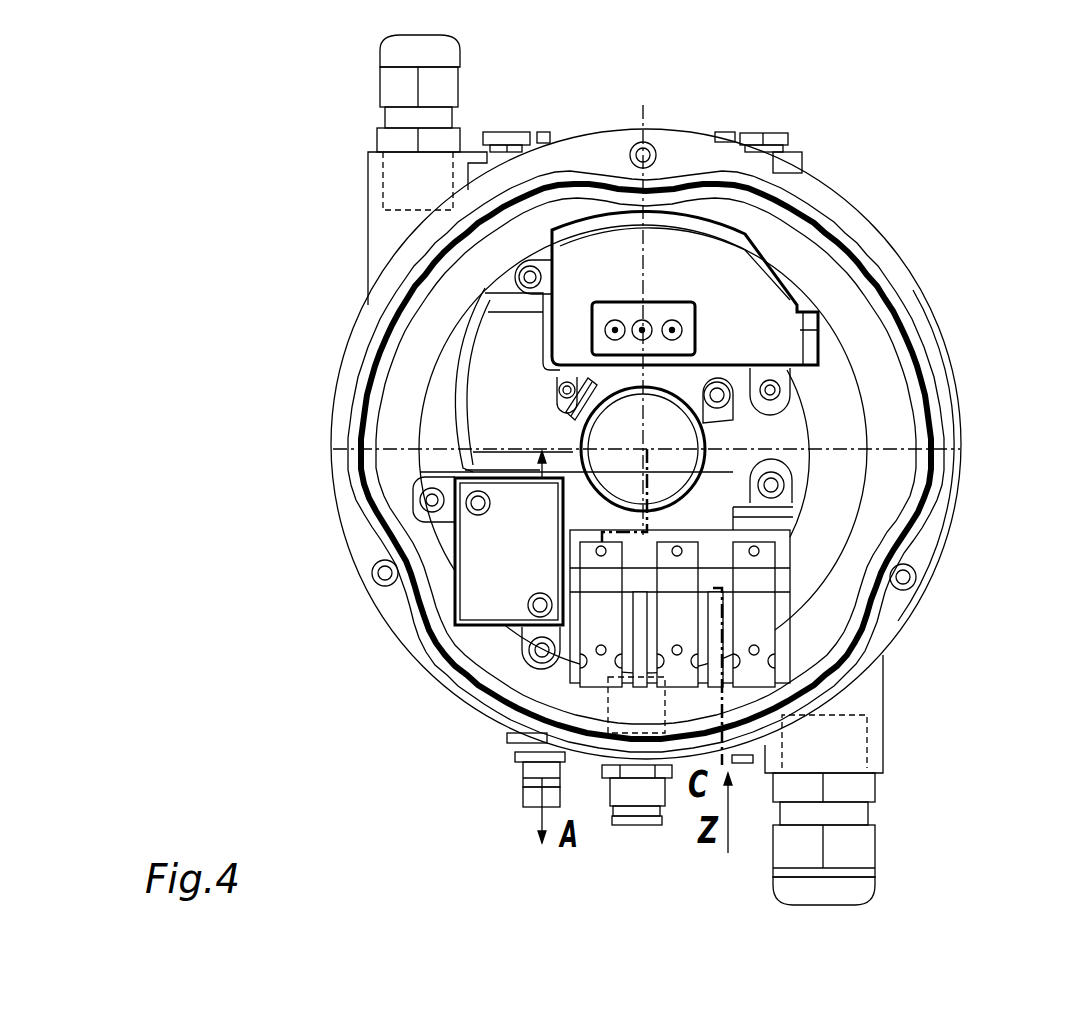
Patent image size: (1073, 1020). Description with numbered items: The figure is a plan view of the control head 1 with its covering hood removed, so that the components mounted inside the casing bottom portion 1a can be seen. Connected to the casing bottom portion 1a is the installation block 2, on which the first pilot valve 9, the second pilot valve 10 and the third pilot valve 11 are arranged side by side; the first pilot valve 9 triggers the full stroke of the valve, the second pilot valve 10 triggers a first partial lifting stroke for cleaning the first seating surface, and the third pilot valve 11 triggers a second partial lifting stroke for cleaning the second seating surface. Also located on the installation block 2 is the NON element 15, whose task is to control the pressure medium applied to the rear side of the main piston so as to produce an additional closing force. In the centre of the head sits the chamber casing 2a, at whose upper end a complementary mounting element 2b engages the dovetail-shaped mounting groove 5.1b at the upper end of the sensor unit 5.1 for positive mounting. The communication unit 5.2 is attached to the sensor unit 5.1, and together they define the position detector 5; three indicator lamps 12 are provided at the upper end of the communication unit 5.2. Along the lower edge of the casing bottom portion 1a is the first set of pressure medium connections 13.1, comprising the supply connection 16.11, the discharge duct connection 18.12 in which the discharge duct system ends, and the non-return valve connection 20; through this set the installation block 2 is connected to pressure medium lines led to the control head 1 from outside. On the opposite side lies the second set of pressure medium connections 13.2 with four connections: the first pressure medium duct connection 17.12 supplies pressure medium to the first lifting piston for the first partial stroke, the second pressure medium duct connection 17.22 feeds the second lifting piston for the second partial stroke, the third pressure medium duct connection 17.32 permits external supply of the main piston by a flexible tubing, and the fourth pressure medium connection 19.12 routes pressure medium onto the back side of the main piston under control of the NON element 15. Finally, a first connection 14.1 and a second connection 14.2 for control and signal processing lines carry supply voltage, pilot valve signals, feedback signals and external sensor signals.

The control head 1 is at (357, 610).
The casing bottom portion 1a is at (375, 543).
The installation block 2 is at (513, 650).
The chamber casing 2a is at (643, 488).
The mounting element 2b is at (643, 449).
The position detector 5 is at (478, 263).
The sensor unit 5.1 is at (510, 395).
The mounting groove 5.1b is at (573, 427).
The communication unit 5.2 is at (692, 290).
The first pilot valve 9 is at (601, 614).
The second pilot valve 10 is at (677, 614).
The third pilot valve 11 is at (754, 614).
The indicator lamps 12 is at (670, 322).
The first set of pressure medium connections 13.1 is at (513, 815).
The second set of pressure medium connections 13.2 is at (817, 138).
The first connection for control and signal processing lines 14.1 is at (827, 743).
The second connection for control and signal processing lines 14.2 is at (420, 165).
The NON element 15 is at (488, 551).
The supply connection 16.11 is at (742, 763).
The first pressure medium duct connection 17.12 is at (552, 136).
The second pressure medium duct connection 17.22 is at (724, 132).
The third pressure medium duct connection 17.32 is at (762, 134).
The discharge duct connection 18.12 is at (533, 757).
The fourth pressure medium connection 19.12 is at (503, 138).
The non-return valve connection 20 is at (635, 787).